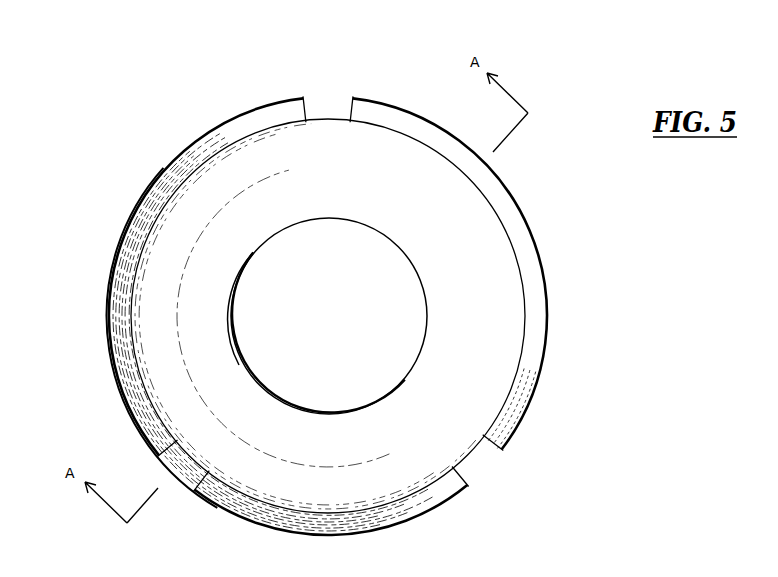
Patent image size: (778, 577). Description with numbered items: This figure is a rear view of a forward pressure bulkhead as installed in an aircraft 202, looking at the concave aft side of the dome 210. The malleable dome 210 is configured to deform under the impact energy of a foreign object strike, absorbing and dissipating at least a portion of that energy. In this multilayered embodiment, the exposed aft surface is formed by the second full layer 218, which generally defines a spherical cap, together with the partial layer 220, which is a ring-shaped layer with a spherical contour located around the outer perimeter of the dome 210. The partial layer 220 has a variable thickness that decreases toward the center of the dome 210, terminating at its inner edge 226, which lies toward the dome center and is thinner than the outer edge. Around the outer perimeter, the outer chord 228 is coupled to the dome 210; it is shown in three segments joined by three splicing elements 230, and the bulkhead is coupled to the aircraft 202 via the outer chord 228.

The aircraft 202 is at (183, 40).
The malleable dome 210 is at (248, 198).
The second full layer 218 is at (350, 317).
The partial layer 220 is at (350, 177).
The inner edge 226 is at (238, 363).
The outer chord 228 is at (533, 263).
The splicing elements 230 is at (331, 107).